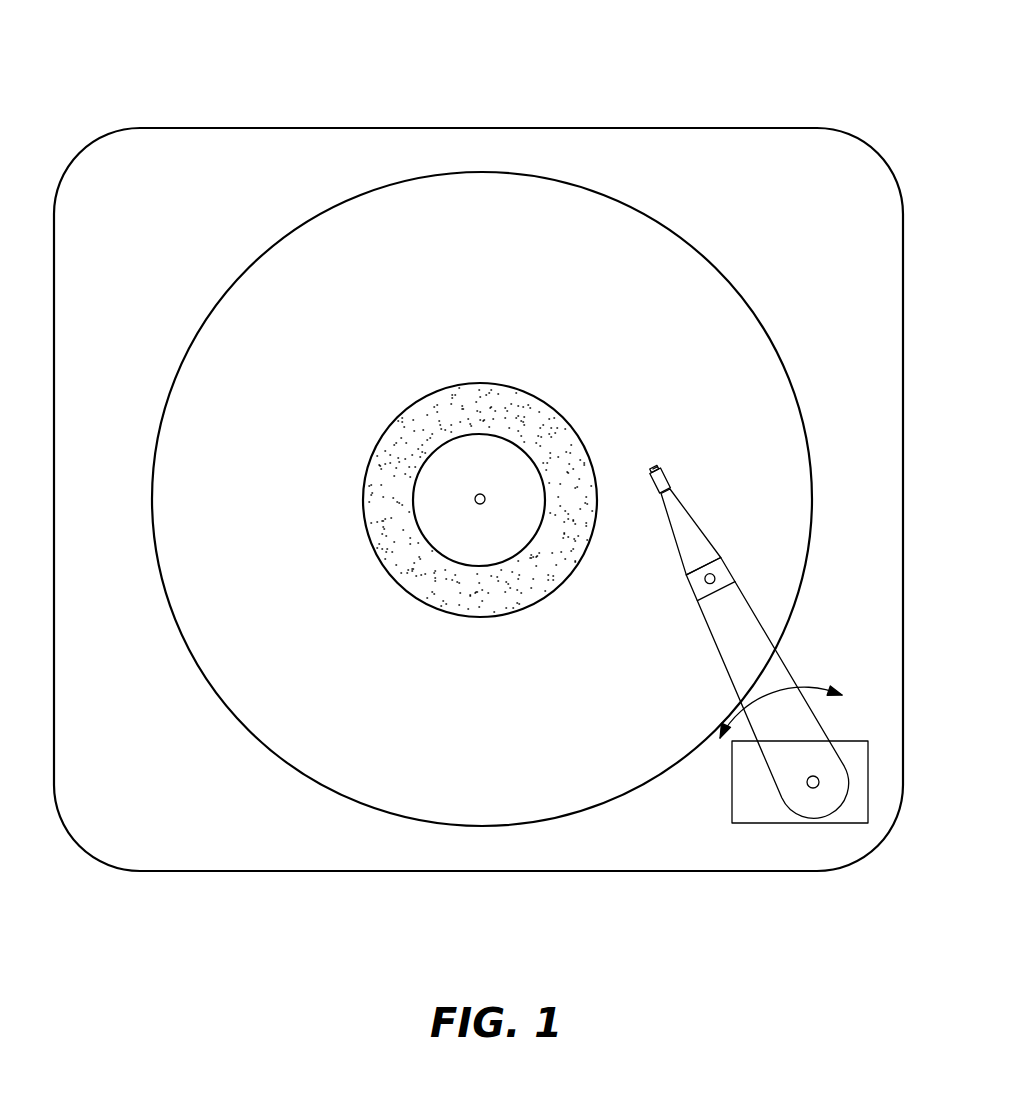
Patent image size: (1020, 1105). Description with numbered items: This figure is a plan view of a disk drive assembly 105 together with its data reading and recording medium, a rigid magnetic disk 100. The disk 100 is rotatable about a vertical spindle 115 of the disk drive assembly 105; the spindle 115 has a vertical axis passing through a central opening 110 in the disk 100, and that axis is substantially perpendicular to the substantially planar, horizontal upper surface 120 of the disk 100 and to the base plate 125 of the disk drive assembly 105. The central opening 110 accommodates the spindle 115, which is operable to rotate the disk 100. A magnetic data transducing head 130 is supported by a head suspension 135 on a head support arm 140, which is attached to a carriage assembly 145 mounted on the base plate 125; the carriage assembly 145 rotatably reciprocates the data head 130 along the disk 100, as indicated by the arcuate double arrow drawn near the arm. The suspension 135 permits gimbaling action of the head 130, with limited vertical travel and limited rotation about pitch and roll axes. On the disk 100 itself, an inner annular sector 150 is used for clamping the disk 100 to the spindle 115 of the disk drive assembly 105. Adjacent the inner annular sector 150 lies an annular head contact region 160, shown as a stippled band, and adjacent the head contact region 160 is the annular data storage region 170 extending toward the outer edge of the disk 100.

The rigid magnetic disk 100 is at (222, 284).
The disk drive assembly 105 is at (712, 88).
The central opening 110 is at (482, 494).
The vertical spindle 115 is at (465, 502).
The upper surface 120 is at (403, 292).
The base plate 125 is at (828, 142).
The magnetic data transducing head 130 is at (673, 477).
The head suspension 135 is at (687, 533).
The head support arm 140 is at (772, 663).
The carriage assembly 145 is at (755, 817).
The inner annular sector 150 is at (507, 552).
The annular head contact region 160 is at (470, 608).
The annular data storage region 170 is at (667, 242).